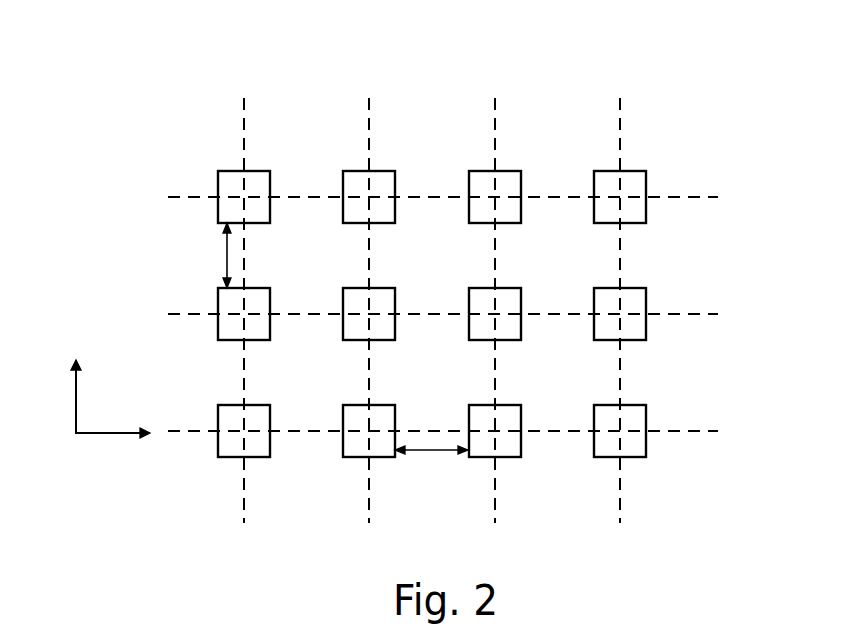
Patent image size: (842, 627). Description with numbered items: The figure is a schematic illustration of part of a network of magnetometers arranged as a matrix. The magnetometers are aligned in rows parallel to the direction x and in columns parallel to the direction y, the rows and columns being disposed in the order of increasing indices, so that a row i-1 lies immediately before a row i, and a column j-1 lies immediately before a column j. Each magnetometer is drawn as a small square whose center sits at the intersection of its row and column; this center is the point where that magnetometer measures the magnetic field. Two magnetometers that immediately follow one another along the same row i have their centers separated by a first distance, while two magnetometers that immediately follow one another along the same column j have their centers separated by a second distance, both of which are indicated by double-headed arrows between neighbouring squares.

The row i is at (707, 313).
The row i-1 is at (706, 430).
The column j-1 is at (244, 520).
The column j is at (369, 520).
The direction X x is at (117, 445).
The direction Y y is at (66, 392).